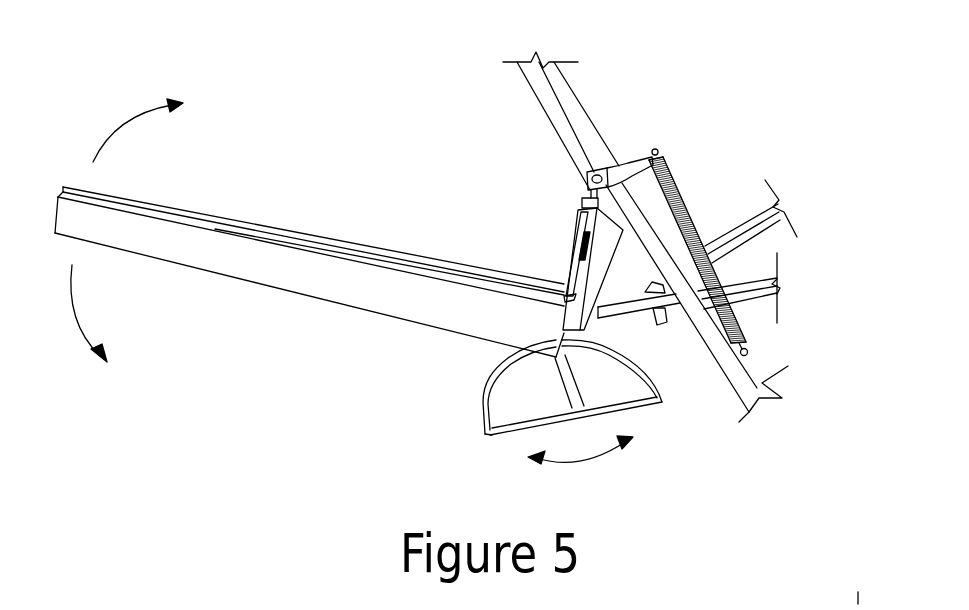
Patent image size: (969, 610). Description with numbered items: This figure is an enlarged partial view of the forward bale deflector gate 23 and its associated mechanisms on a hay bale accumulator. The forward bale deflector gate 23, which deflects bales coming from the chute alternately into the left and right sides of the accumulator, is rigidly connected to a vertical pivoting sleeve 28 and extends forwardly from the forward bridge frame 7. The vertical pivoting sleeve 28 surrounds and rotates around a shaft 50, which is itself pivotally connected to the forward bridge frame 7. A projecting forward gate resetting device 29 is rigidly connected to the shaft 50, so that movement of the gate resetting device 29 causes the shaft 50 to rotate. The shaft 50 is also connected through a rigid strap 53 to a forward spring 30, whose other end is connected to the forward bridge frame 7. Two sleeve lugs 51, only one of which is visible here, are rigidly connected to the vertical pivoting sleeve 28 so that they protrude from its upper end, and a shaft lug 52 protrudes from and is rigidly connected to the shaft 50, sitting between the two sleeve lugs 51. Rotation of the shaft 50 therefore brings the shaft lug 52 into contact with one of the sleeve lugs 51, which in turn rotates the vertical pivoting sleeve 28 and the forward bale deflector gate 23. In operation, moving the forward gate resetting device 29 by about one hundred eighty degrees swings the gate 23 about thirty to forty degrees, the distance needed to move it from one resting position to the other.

The forward bridge frame 7 is at (581, 116).
The forward bale deflector gate 23 is at (232, 255).
The vertical pivoting sleeve 28 is at (565, 286).
The forward gate resetting device 29 is at (486, 412).
The forward spring 30 is at (681, 204).
The shaft 50 is at (586, 194).
The sleeve lugs 51 is at (577, 240).
The shaft lug 52 is at (578, 212).
The rigid strap 53 is at (623, 167).